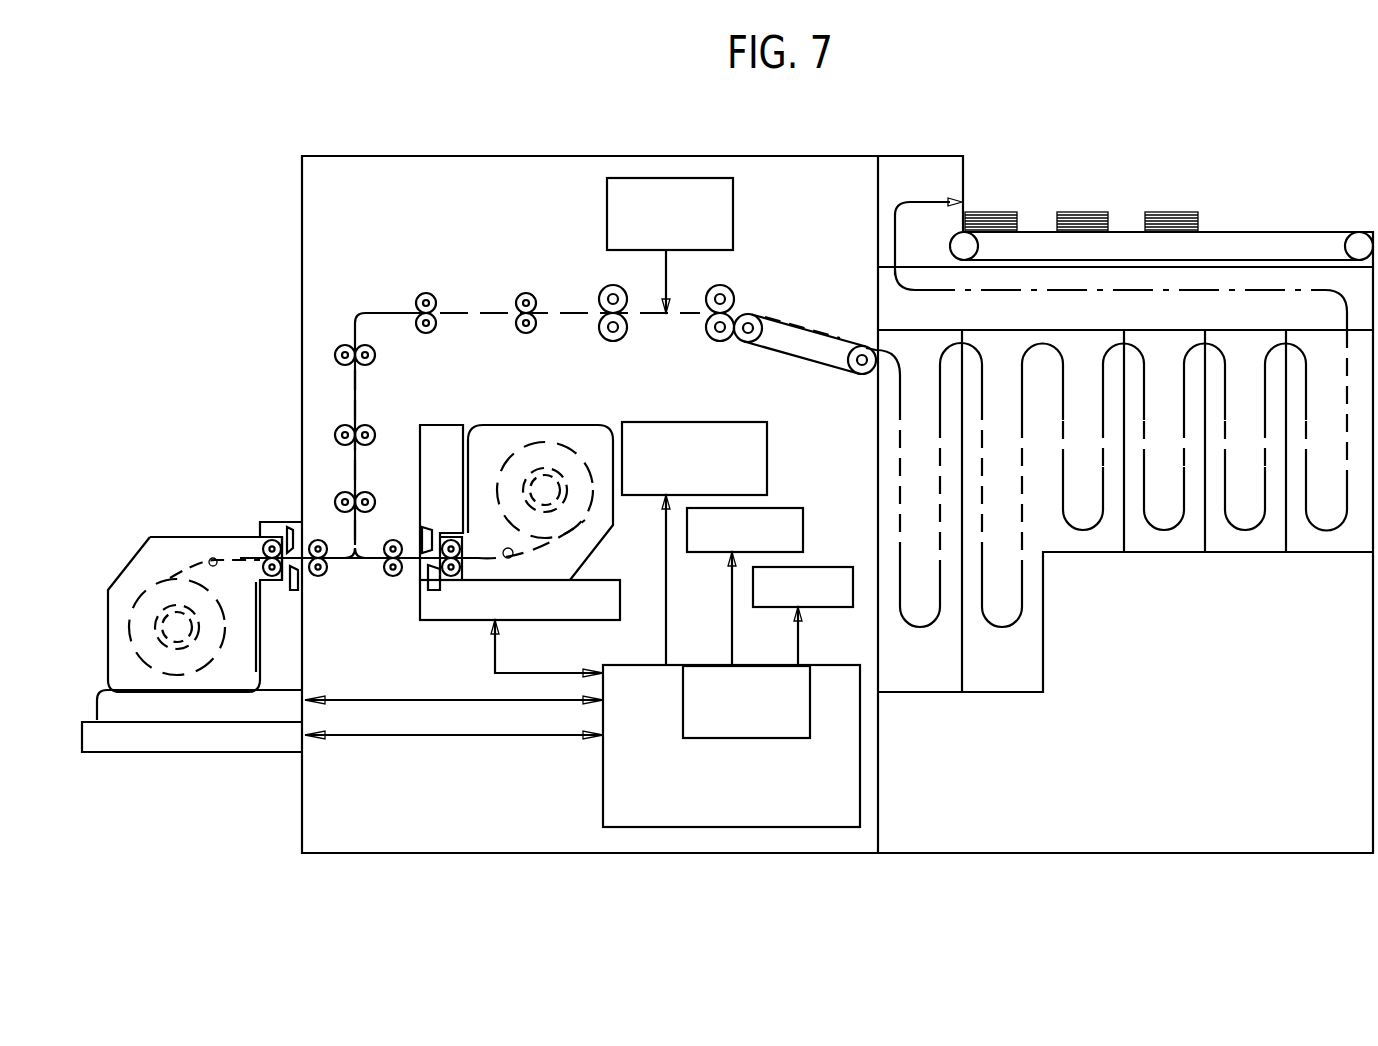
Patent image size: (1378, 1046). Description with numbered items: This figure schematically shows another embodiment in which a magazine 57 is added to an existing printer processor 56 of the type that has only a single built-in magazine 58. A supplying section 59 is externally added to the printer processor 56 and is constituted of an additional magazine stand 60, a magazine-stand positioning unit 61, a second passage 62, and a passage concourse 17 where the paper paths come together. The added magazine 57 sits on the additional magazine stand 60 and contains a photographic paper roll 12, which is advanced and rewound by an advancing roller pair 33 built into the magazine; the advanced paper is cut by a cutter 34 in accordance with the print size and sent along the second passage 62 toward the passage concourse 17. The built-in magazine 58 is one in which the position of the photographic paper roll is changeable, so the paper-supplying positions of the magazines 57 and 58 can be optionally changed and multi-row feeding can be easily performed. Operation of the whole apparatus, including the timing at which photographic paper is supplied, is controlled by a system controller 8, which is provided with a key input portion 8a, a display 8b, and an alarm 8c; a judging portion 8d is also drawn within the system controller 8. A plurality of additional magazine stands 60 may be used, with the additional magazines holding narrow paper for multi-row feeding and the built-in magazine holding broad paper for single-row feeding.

The system controller 8 is at (773, 746).
The key input portion 8a is at (670, 422).
The display 8b is at (700, 552).
The alarm 8c is at (848, 567).
The judging portion 8d is at (683, 690).
The photographic paper roll 12 is at (157, 577).
The passage concourse 17 is at (355, 410).
The advancing roller pair 33 is at (268, 524).
The cutter 34 is at (290, 527).
The printer processor 56 is at (565, 157).
The magazine 57 is at (172, 537).
The built-in magazine 58 is at (565, 425).
The supplying section 59 is at (203, 480).
The additional magazine stand 60 is at (97, 690).
The magazine-stand positioning unit 61 is at (175, 752).
The second passage 62 is at (320, 578).